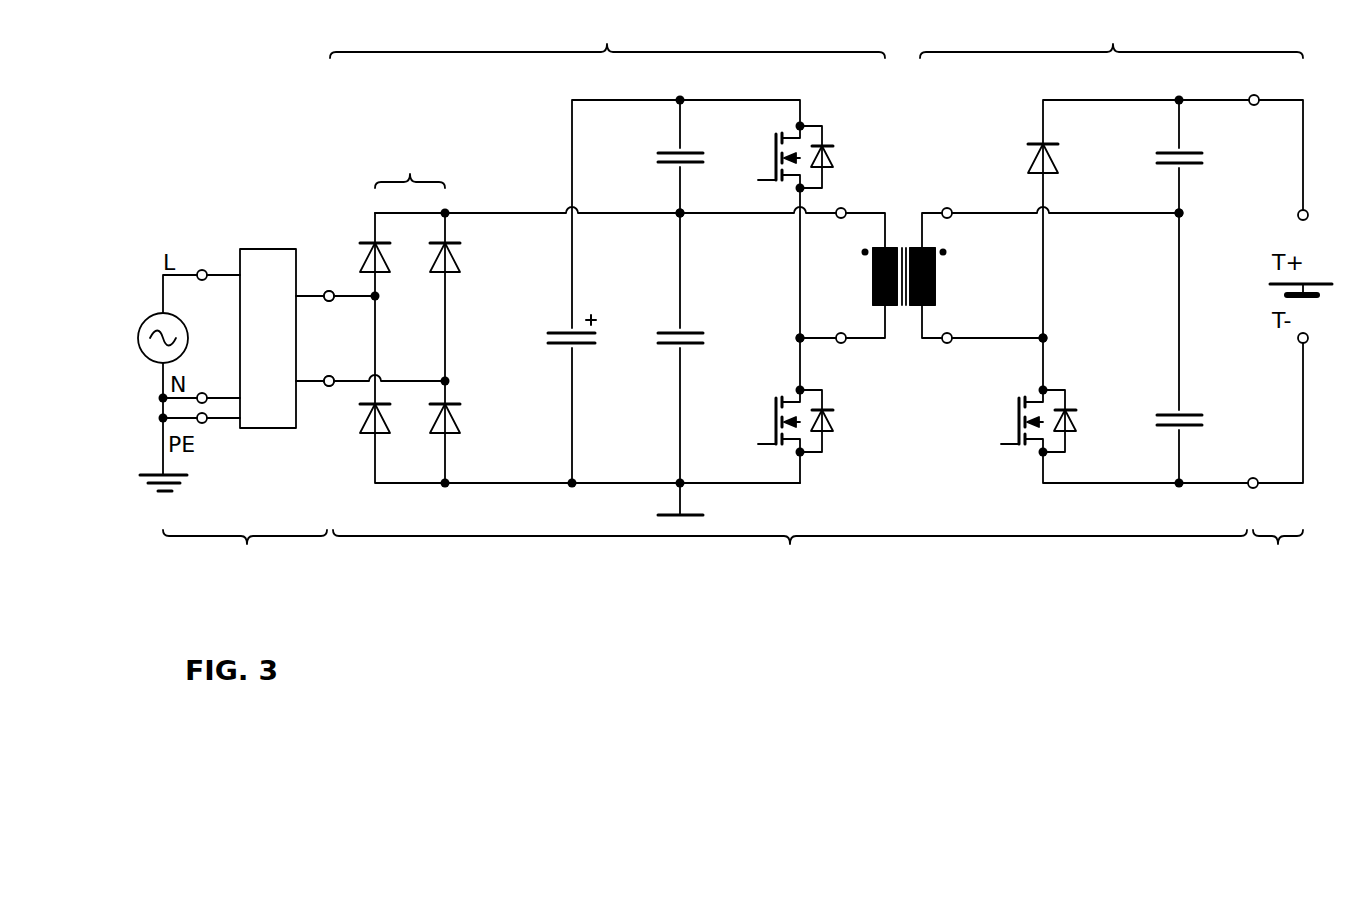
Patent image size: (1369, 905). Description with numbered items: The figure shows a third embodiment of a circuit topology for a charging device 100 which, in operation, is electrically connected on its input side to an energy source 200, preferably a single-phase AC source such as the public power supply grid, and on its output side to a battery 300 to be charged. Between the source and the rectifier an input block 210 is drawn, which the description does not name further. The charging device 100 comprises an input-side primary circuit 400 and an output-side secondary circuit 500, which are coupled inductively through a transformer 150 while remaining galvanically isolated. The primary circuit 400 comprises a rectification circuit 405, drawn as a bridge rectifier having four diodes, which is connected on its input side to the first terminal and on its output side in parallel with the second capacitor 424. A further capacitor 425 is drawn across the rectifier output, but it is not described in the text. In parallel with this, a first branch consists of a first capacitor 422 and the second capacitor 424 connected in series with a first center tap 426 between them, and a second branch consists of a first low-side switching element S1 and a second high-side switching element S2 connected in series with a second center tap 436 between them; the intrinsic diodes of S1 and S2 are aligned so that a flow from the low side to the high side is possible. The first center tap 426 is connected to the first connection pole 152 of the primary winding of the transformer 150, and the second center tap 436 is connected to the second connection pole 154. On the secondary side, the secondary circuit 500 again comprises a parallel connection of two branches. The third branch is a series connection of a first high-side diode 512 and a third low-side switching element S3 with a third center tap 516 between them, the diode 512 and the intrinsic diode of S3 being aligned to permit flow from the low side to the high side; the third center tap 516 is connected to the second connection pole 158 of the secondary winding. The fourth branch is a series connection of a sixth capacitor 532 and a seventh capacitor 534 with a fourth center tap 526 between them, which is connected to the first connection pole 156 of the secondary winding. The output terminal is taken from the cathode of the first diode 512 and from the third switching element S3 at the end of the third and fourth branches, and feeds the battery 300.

The charging device 100 is at (790, 555).
The energy source 200 is at (245, 555).
The battery 300 is at (1278, 555).
The primary circuit 400 is at (607, 33).
The secondary circuit 500 is at (1111, 33).
The rectification circuit 405 is at (410, 287).
The input filter unit 210 is at (275, 249).
The first capacitor 422 is at (668, 150).
The second capacitor 424 is at (672, 347).
The electrolytic capacitor 425 is at (560, 330).
The first center tap 426 is at (678, 216).
The second center tap 436 is at (798, 336).
The first low-side switching element S1 is at (776, 415).
The second high-side switching element S2 is at (776, 143).
The third low-side switching element S3 is at (1019, 422).
The first connection pole of the primary winding 152 is at (841, 208).
The second connection pole of the primary winding 154 is at (841, 343).
The transformer 150 is at (937, 355).
The first connection pole of the secondary winding 156 is at (947, 208).
The second connection pole of the secondary winding 158 is at (947, 343).
The first high-side diode 512 is at (1050, 142).
The third center tap 516 is at (1047, 336).
The fourth center tap 526 is at (1177, 217).
The sixth capacitor 532 is at (1168, 150).
The seventh capacitor 534 is at (1170, 412).